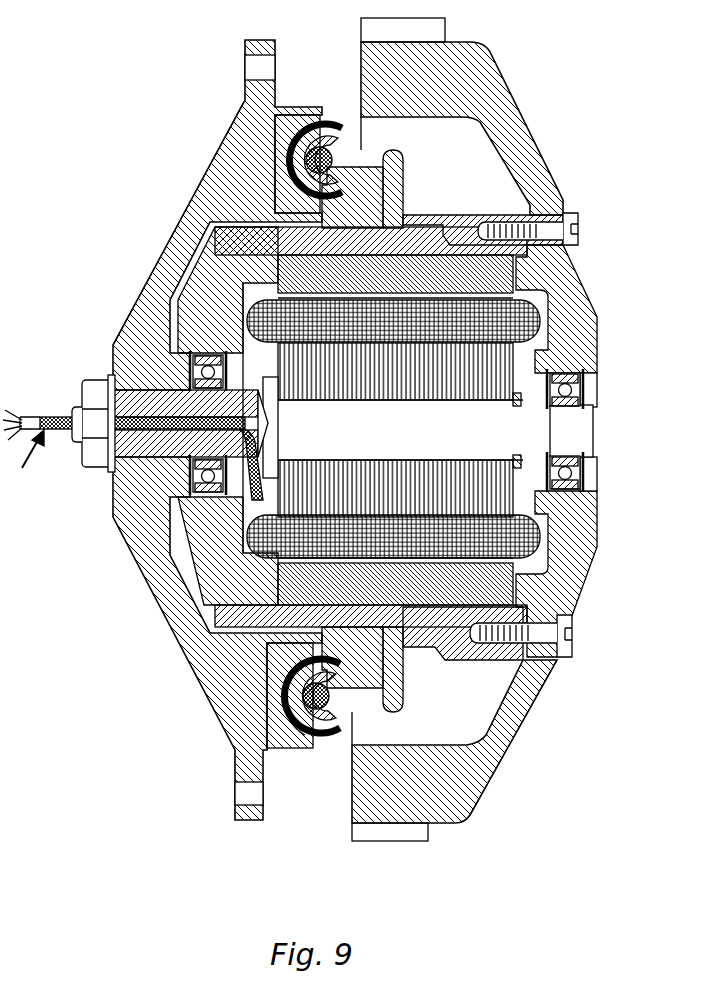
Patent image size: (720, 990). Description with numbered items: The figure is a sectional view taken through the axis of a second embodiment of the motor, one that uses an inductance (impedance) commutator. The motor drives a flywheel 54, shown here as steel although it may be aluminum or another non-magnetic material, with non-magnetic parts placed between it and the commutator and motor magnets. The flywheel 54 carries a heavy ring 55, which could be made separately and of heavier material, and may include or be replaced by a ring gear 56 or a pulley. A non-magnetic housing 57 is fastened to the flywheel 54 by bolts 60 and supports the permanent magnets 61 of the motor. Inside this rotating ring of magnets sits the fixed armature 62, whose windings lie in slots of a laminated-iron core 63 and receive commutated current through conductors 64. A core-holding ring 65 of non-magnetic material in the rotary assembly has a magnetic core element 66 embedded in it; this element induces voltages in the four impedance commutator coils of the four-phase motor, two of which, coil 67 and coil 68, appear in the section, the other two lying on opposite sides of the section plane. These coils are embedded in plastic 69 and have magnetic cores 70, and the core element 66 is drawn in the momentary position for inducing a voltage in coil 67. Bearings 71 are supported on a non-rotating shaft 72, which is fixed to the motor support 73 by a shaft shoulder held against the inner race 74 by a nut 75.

The flywheel 54 is at (541, 134).
The heavy ring 55 is at (455, 822).
The ring gear 56 is at (437, 33).
The non-magnetic housing 57 is at (452, 655).
The bolts 60 is at (572, 222).
The permanent magnets 61 is at (500, 275).
The fixed armature 62 is at (530, 327).
The laminated-iron core 63 is at (313, 368).
The conductors 64 is at (23, 458).
The core-holding ring 65 is at (392, 152).
The magnetic core element 66 is at (368, 198).
The impedance commutator coil 67 is at (333, 122).
The impedance commutator coil 68 is at (327, 740).
The plastic 69 is at (285, 117).
The magnetic cores 70 is at (343, 715).
The bearings 71 is at (200, 373).
The non-rotating shaft 72 is at (428, 427).
The motor support 73 is at (177, 618).
The inner race 74 is at (200, 462).
The nut 75 is at (95, 413).